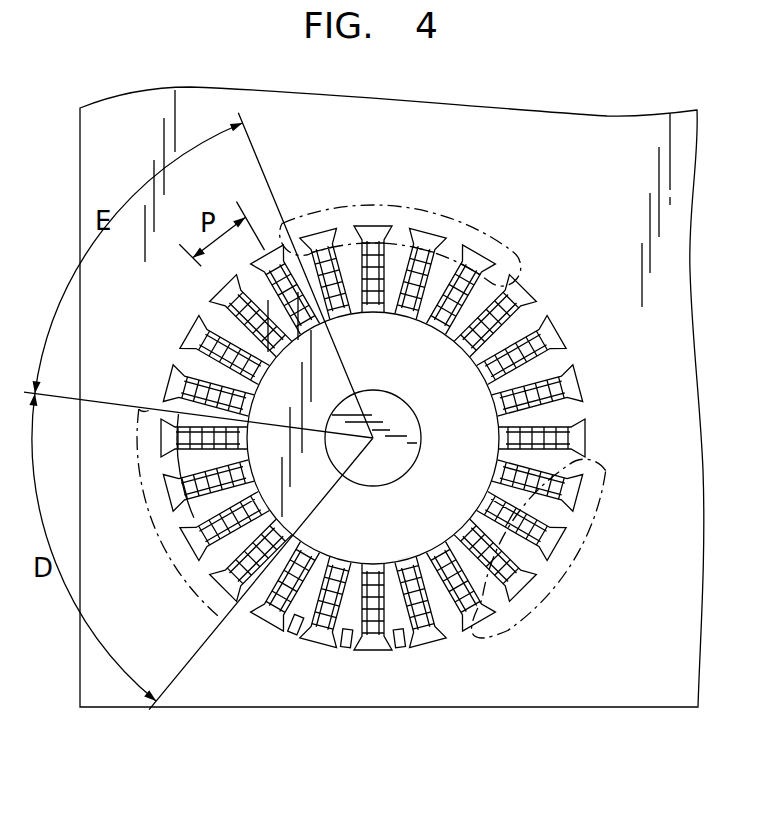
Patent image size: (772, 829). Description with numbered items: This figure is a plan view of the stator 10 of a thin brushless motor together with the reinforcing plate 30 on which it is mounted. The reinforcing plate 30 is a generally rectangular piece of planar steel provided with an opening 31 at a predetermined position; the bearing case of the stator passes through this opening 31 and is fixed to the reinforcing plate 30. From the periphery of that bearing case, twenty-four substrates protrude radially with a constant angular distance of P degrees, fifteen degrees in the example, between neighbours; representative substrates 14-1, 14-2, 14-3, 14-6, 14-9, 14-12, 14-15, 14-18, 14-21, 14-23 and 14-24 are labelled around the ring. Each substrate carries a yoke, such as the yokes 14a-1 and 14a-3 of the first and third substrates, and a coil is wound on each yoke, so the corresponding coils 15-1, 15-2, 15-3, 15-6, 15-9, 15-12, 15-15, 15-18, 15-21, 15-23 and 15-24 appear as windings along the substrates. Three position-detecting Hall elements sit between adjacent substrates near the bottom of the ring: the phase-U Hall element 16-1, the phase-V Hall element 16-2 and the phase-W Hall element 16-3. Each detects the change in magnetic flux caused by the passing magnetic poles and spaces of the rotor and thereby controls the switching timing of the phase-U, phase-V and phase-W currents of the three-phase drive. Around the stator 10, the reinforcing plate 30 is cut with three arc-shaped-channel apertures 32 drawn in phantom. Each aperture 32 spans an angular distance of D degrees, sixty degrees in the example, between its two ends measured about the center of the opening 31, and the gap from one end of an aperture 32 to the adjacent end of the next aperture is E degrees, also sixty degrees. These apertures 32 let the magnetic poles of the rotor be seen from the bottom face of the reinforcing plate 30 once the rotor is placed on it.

The stator 10 is at (402, 359).
The substrate 14-1 is at (375, 650).
The substrate 14-2 is at (318, 644).
The substrate 14-3 is at (270, 622).
The substrate 14-6 is at (170, 497).
The substrate 14-9 is at (188, 333).
The substrate 14-12 is at (316, 228).
The substrate 14-15 is at (484, 250).
The substrate 14-18 is at (578, 384).
The substrate 14-21 is at (560, 541).
The substrate 14-23 is at (480, 618).
The substrate 14-24 is at (433, 645).
The yoke 14a-1 is at (412, 552).
The yoke 14a-3 is at (305, 537).
The coil 15-1 is at (386, 612).
The coil 15-2 is at (330, 612).
The coil 15-3 is at (298, 602).
The coil 15-6 is at (200, 515).
The coil 15-9 is at (213, 318).
The coil 15-12 is at (337, 258).
The coil 15-15 is at (477, 288).
The coil 15-18 is at (552, 375).
The coil 15-21 is at (540, 520).
The coil 15-23 is at (480, 588).
The coil 15-24 is at (445, 640).
The phase-U position-detecting Hall element 16-1 is at (404, 642).
The phase-V position-detecting Hall element 16-2 is at (347, 628).
The phase-W position-detecting Hall element 16-3 is at (292, 634).
The reinforcing plate 30 is at (612, 707).
The opening 31 is at (400, 410).
The arc-shaped-channel aperture 32 is at (434, 212).